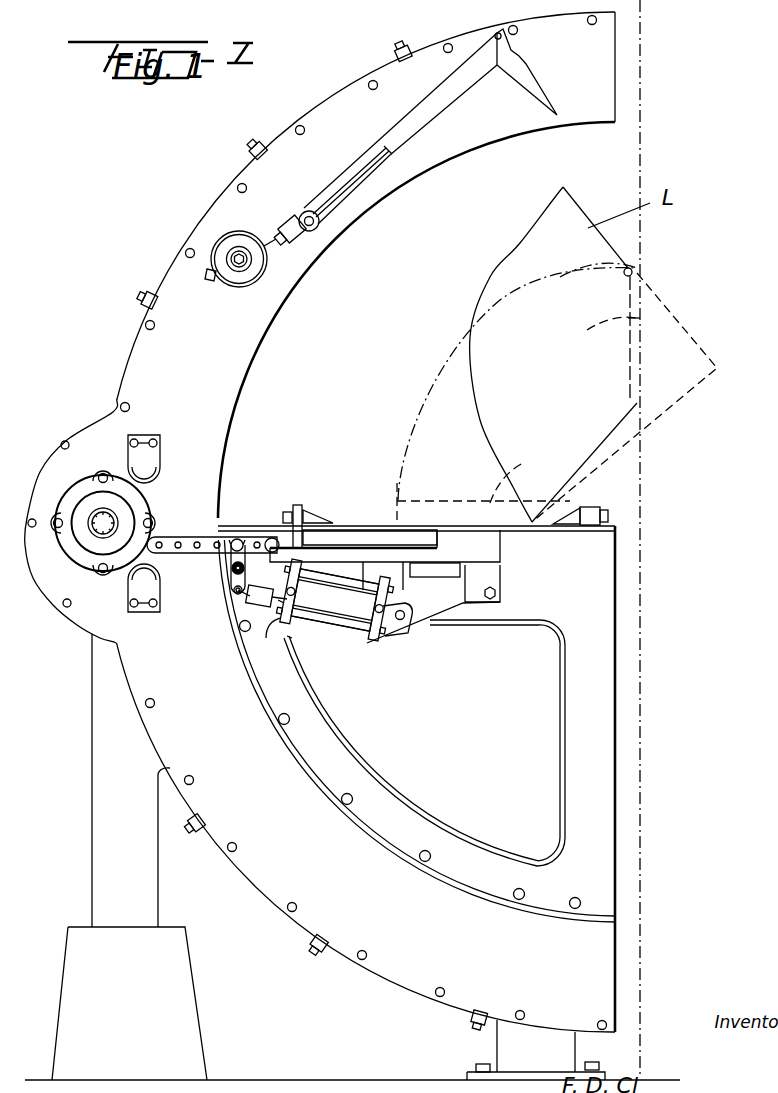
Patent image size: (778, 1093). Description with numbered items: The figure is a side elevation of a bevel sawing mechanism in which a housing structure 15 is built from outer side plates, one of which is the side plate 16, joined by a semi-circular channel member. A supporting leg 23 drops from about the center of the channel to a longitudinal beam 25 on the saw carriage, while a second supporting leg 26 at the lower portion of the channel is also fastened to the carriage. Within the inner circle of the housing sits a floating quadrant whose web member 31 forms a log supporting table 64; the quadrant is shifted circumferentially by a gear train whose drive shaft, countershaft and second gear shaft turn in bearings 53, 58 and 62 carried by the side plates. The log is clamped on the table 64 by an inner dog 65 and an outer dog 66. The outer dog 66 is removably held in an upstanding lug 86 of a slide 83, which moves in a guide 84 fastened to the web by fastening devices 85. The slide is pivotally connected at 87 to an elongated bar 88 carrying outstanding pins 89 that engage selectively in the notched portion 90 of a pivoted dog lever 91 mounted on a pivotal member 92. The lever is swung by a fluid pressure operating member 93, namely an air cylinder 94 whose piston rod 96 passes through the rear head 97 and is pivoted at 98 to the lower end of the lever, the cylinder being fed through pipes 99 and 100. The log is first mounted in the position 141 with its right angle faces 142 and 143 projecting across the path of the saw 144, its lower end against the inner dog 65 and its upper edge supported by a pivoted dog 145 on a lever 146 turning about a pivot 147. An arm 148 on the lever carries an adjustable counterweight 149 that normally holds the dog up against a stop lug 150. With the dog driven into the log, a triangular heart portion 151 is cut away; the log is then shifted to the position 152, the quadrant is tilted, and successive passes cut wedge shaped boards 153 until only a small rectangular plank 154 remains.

The housing structure 15 is at (626, 82).
The outer side plate 16 is at (505, 127).
The supporting leg or standard 23 is at (92, 878).
The longitudinal beam 25 is at (129, 1003).
The second supporting leg or standard 26 is at (536, 1050).
The web member 31 is at (507, 612).
The bearing 53 is at (92, 506).
The bearing 58 is at (160, 590).
The bearing 62 is at (147, 436).
The table 64 is at (370, 528).
The log clamping dog 65 is at (574, 507).
The second or outer dog 66 is at (318, 508).
The slide 83 is at (343, 528).
The guide 84 is at (501, 552).
The fastening devices 85 is at (497, 592).
The upstanding lug 86 is at (293, 510).
The pivotal connection 87 is at (273, 542).
The elongated link or bar 88 is at (188, 537).
The outstanding pins 89 is at (231, 562).
The recessed or notched portion 90 is at (237, 538).
The pivoted dog lever 91 is at (233, 580).
The pivotal member 92 is at (266, 583).
The fluid pressure operating member 93 is at (356, 640).
The air cylinder 94 is at (323, 630).
The piston rod 96 is at (278, 603).
The rear head 97 is at (287, 640).
The pivotal connection 98 is at (238, 595).
The pipe 99 is at (267, 641).
The pipe 100 is at (383, 648).
The initial log position 141 is at (505, 253).
The right angle face / flat side 142 is at (625, 250).
The right angle face / flat face 143 is at (615, 456).
The saw 144 is at (642, 548).
The pivoted dog 145 is at (533, 68).
The lever 146 is at (437, 113).
The pivot 147 is at (318, 232).
The shaft or arm 148 is at (270, 240).
The balancing or counterweight 149 is at (232, 288).
The stop lug 150 is at (495, 33).
The triangular heart portion 151 is at (673, 333).
The second log position 152 is at (435, 374).
The wedge shaped or beveled board 153 is at (610, 266).
The substantially rectangular plank 154 is at (528, 473).